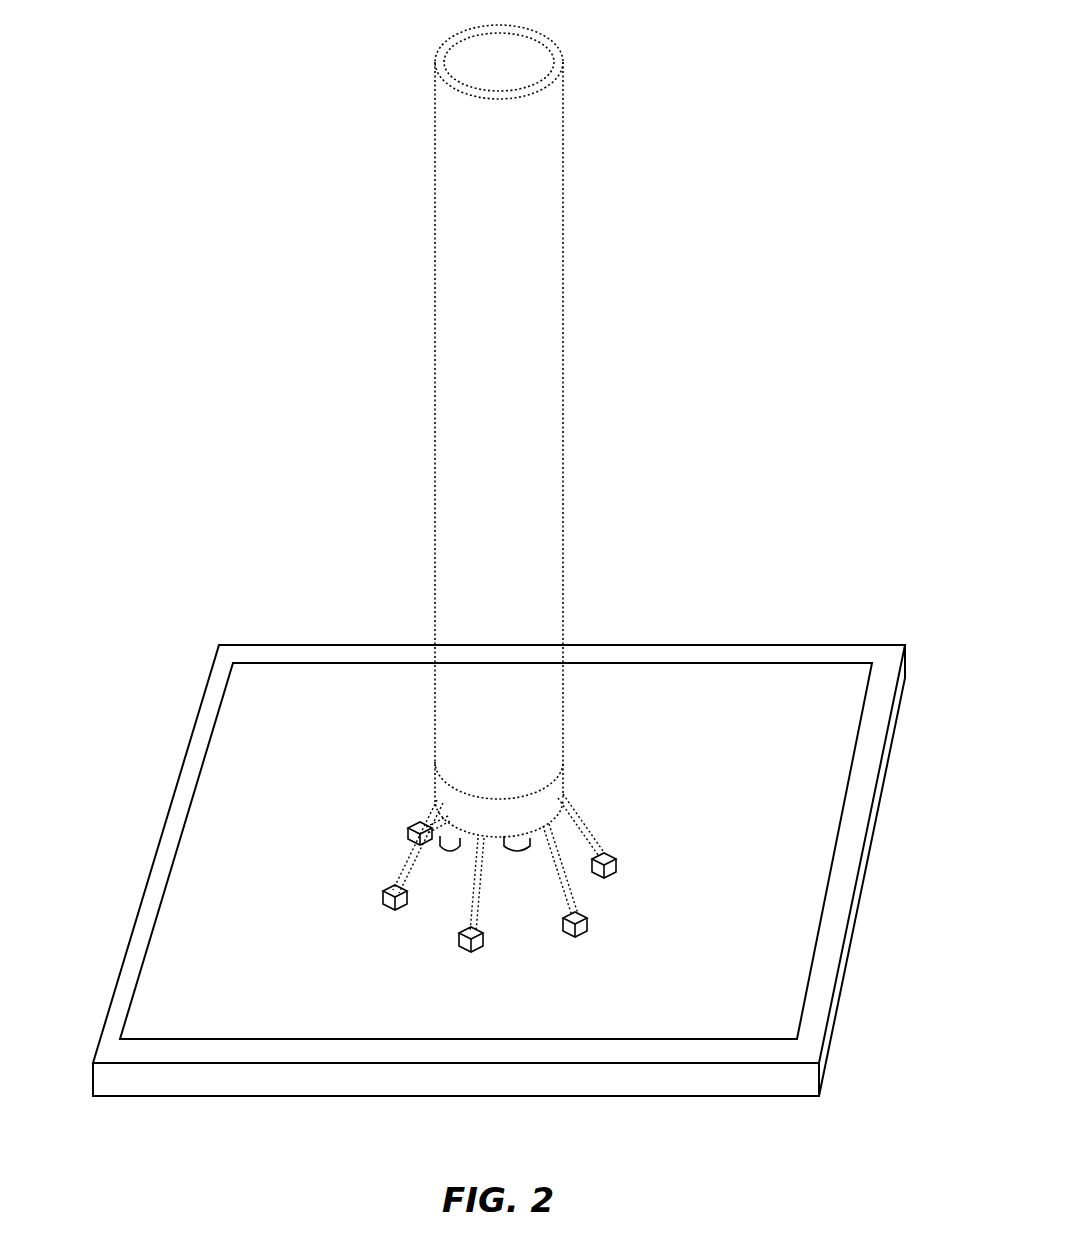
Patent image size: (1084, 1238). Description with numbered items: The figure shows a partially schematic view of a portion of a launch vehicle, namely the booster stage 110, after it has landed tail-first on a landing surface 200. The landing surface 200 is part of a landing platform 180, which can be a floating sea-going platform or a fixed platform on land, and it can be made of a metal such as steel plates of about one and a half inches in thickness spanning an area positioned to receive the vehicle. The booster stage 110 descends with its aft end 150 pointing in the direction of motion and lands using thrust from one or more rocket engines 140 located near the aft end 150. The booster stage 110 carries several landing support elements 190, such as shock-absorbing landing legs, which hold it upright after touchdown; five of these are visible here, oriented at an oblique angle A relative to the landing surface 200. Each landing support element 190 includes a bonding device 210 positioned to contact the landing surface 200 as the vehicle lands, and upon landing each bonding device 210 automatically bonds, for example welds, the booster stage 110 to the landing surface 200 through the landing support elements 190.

The booster stage 110 is at (436, 483).
The rocket engines 140 is at (449, 852).
The aft end 150 is at (390, 818).
The landing platform 180 is at (768, 1078).
The landing support elements 190 is at (430, 810).
The landing surface 200 is at (773, 975).
The bonding device 210 is at (408, 832).
The oblique angle A is at (568, 858).